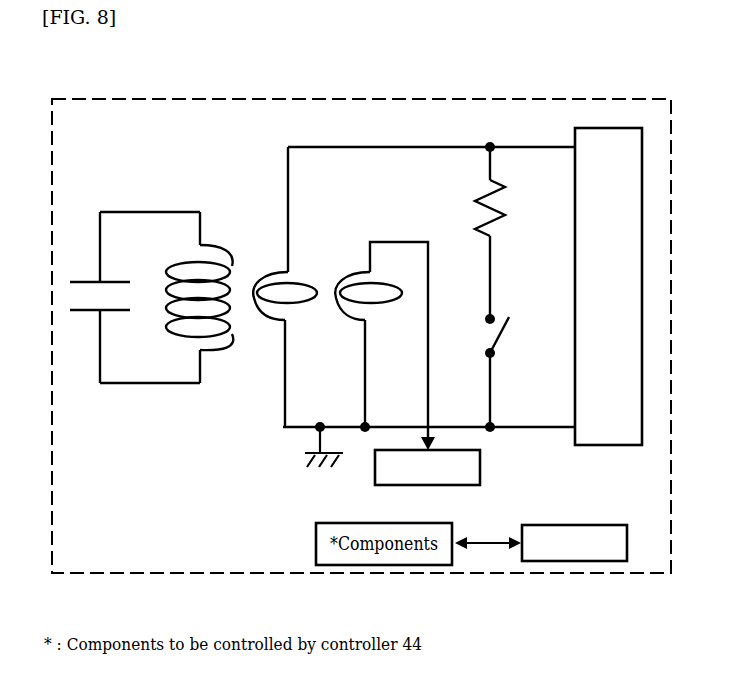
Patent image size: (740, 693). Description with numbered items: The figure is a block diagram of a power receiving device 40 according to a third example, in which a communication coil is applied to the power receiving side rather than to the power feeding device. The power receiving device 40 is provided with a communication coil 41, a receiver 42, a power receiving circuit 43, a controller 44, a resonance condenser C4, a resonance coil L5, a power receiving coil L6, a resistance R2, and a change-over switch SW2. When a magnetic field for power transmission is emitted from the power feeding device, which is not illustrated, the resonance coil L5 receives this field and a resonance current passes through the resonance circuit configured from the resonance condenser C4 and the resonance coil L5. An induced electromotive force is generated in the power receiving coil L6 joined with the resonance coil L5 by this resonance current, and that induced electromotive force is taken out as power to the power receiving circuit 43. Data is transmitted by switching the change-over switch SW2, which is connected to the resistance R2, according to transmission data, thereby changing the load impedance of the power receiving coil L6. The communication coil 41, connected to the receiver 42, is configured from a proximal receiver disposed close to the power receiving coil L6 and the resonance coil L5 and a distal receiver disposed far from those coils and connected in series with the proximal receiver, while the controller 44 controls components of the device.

The power receiving device 40 is at (627, 99).
The communication coil 41 is at (377, 312).
The receiver 42 is at (480, 467).
The power receiving circuit 43 is at (575, 295).
The controller 44 is at (608, 525).
The resonance condenser C4 is at (135, 297).
The resonance coil L5 is at (203, 297).
The power receiving coil L6 is at (289, 288).
The resistance R2 is at (509, 208).
The change-over switch SW2 is at (520, 341).